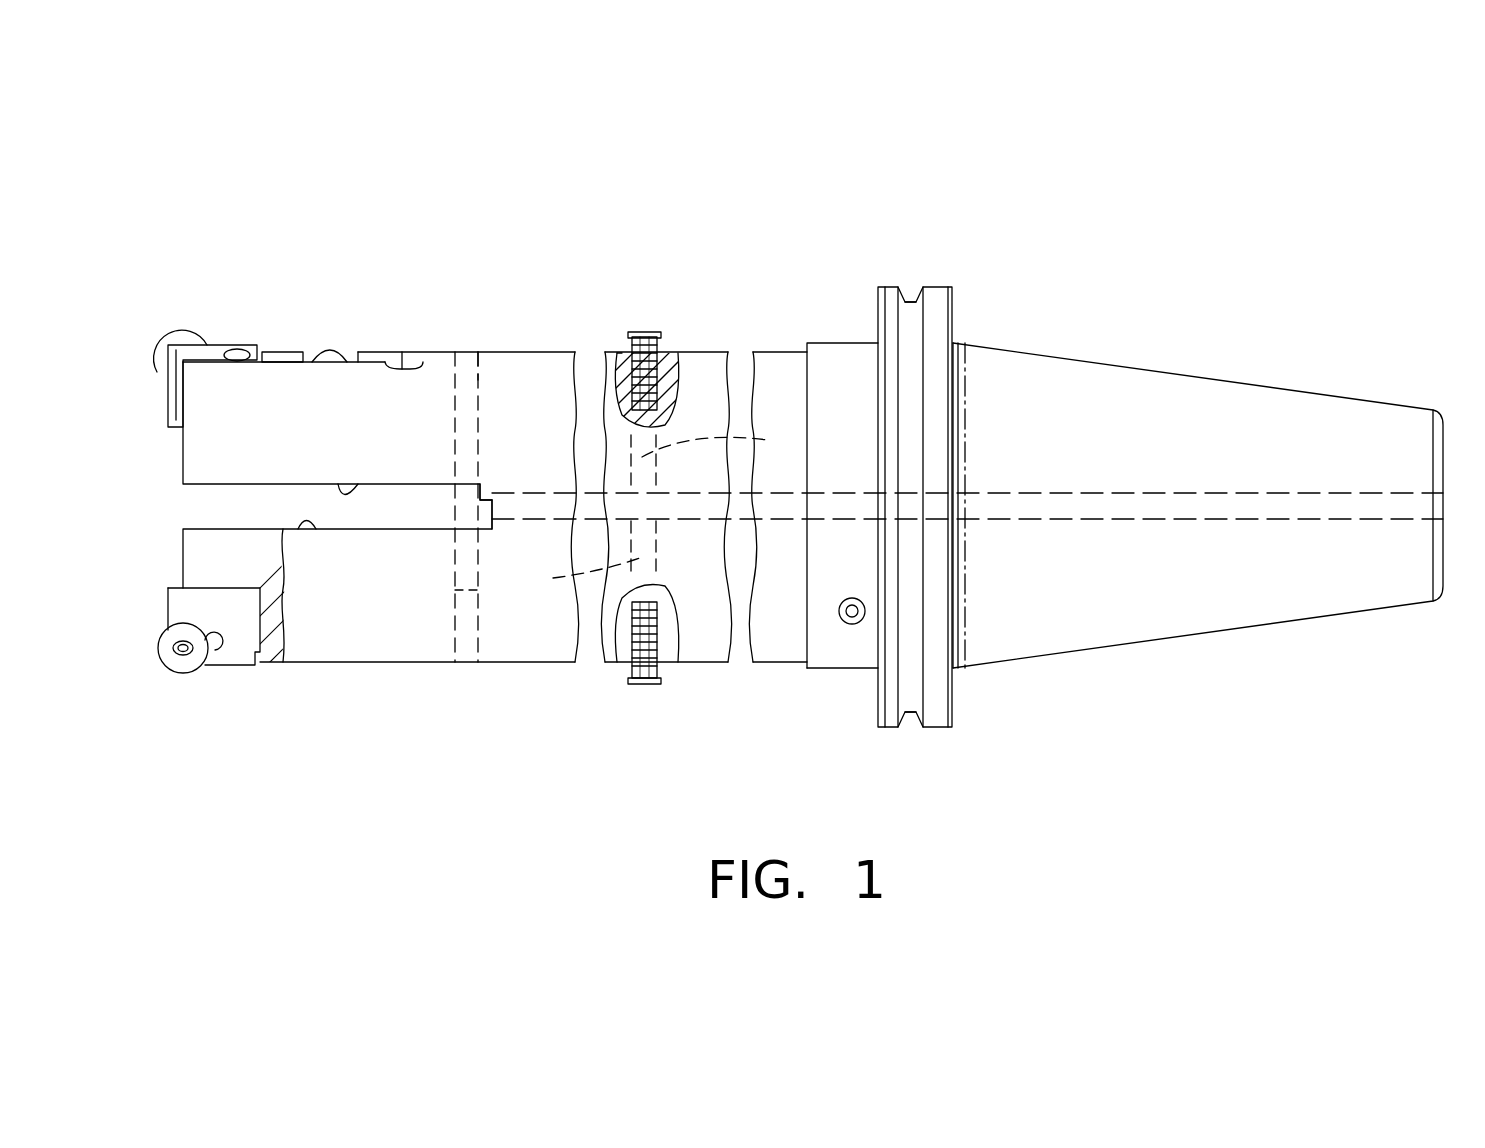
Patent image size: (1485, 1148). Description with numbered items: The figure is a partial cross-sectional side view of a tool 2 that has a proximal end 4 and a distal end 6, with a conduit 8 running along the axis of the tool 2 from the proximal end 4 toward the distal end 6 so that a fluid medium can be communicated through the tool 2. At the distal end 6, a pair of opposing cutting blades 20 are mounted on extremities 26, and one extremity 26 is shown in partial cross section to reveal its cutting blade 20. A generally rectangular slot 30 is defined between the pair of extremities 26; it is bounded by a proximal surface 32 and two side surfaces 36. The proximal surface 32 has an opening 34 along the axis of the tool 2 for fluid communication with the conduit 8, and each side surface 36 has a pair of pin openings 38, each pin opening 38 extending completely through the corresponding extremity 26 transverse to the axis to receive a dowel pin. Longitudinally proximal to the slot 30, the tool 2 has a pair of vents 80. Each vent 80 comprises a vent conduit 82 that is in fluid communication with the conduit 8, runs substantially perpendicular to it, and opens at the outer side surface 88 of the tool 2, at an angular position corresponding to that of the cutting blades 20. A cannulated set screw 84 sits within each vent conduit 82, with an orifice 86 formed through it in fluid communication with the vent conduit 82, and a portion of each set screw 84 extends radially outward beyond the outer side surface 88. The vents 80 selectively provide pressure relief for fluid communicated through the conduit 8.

The tool 2 is at (1085, 156).
The proximal end 4 is at (1419, 385).
The distal end 6 is at (155, 325).
The conduit 8 is at (663, 508).
The cutting blade 20 is at (186, 664).
The extremity 26 is at (310, 628).
The slot 30 is at (206, 508).
The proximal surface 32 is at (496, 492).
The opening 34 is at (484, 514).
The side surface 36 is at (340, 484).
The pin opening 38 is at (478, 365).
The vent 80 is at (690, 288).
The vent conduit 82 is at (660, 508).
The cannulated set screw 84 is at (657, 350).
The orifice 86 is at (638, 331).
The outer side surface 88 is at (608, 350).